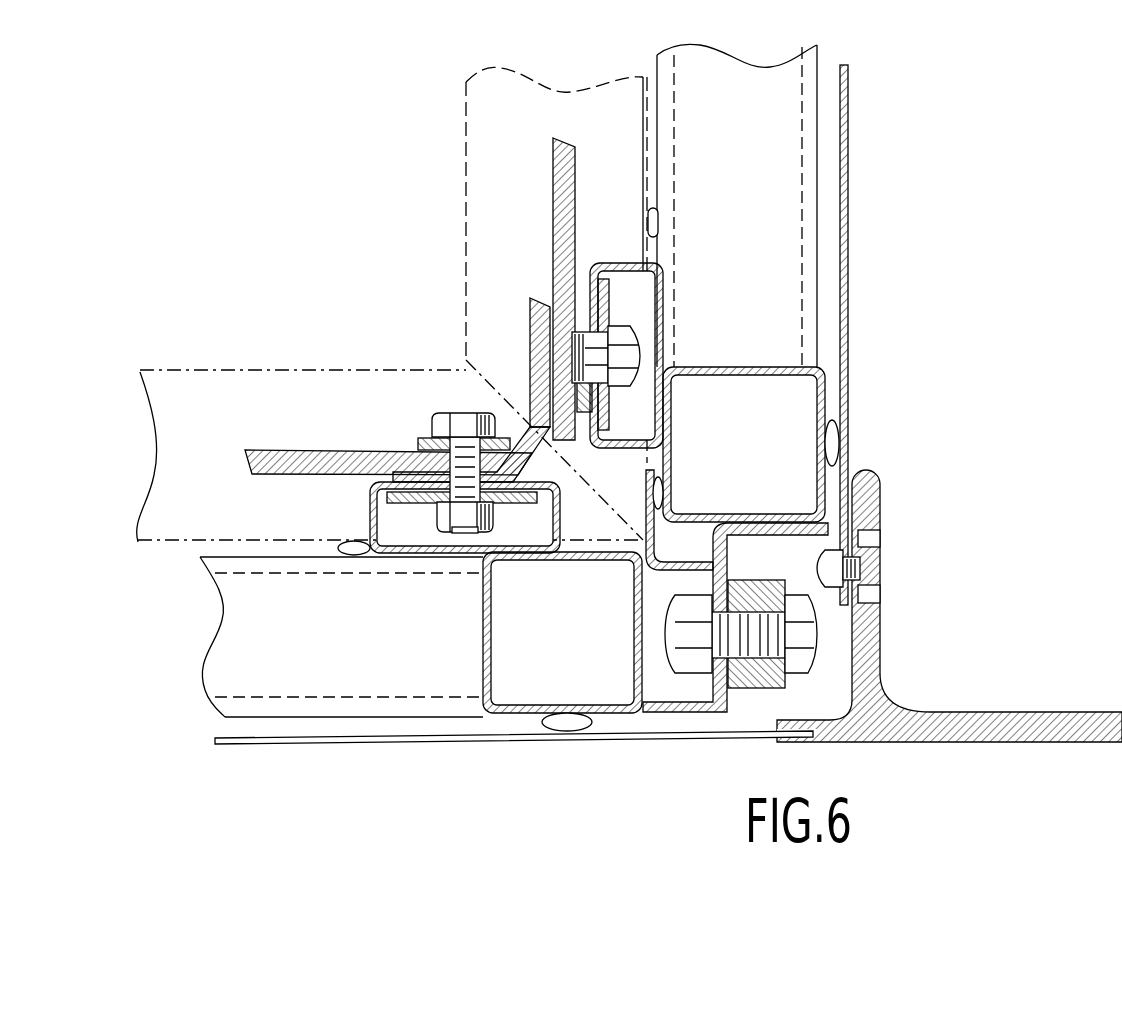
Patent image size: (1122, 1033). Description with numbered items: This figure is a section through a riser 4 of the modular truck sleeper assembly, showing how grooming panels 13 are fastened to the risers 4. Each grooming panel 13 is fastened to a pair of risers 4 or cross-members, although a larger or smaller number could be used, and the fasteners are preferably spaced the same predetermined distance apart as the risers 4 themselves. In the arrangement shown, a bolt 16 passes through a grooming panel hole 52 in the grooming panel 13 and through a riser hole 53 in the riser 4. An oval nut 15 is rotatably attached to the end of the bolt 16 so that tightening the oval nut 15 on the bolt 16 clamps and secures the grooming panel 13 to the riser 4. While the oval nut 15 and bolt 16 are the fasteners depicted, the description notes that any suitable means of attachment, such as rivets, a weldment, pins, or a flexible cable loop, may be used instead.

The riser 4 is at (622, 262).
The grooming panel 13 is at (282, 452).
The oval nut 15 is at (610, 300).
The bolt 16 is at (436, 412).
The grooming panel hole 52 is at (551, 298).
The riser hole 53 is at (584, 298).